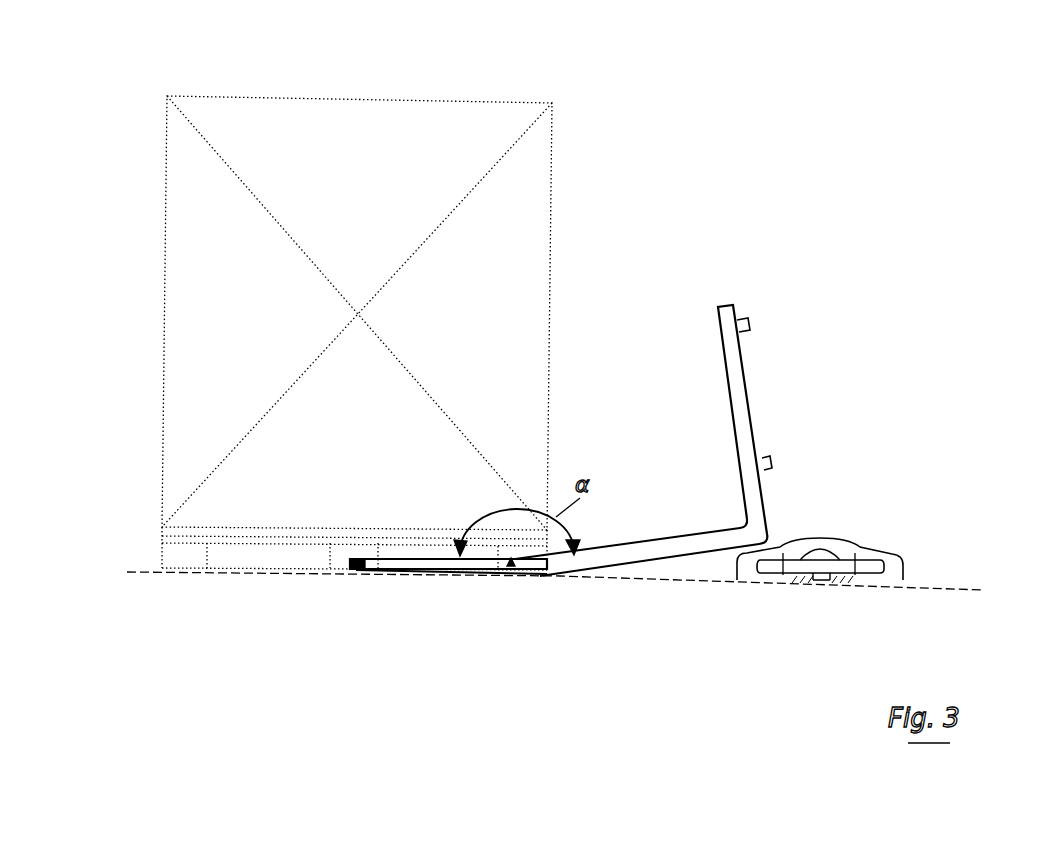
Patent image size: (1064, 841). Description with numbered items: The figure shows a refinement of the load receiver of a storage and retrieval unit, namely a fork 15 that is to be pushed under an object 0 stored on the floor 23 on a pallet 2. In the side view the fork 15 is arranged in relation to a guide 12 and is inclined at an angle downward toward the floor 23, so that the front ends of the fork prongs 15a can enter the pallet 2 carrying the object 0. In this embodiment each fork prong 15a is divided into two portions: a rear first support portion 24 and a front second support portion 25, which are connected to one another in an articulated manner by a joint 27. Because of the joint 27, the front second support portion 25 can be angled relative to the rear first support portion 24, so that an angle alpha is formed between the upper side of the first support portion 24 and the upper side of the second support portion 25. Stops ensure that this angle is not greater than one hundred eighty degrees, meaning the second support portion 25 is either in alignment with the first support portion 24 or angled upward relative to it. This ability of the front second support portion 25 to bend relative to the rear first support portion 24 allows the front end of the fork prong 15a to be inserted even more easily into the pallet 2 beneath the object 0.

The object 0 is at (417, 118).
The pallet 2 is at (183, 560).
The guide 12 is at (820, 585).
The fork 15 is at (752, 398).
The fork prongs 15a is at (596, 575).
The floor 23 is at (958, 585).
The rear first support portion 24 is at (665, 540).
The front second support portion 25 is at (413, 565).
The joint 27 is at (512, 570).